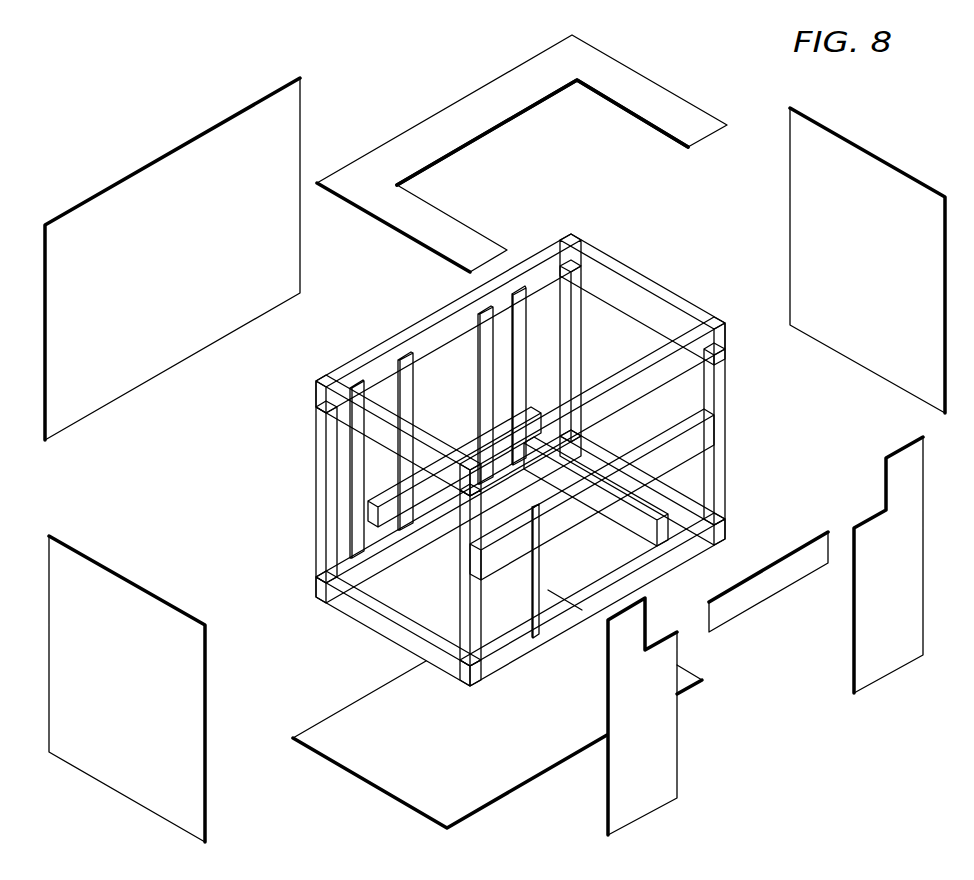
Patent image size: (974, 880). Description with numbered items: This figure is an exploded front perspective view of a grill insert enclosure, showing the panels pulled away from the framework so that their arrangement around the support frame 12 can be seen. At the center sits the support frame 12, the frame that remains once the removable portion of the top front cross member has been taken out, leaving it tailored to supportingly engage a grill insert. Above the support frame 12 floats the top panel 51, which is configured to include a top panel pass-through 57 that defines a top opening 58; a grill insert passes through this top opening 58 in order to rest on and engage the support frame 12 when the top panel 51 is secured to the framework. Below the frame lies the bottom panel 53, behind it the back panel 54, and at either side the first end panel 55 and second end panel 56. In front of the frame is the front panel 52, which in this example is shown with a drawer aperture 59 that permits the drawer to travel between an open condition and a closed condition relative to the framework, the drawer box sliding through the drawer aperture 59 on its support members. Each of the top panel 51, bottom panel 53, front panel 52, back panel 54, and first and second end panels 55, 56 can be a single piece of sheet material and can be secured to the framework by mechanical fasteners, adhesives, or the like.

The support frame 12 is at (520, 449).
The top panel 51 is at (522, 153).
The front panel 52 is at (765, 636).
The bottom panel 53 is at (497, 709).
The back panel 54 is at (172, 259).
The first end panel 55 is at (127, 689).
The second end panel 56 is at (867, 260).
The top panel pass-through 57 is at (542, 132).
The top opening 58 is at (542, 132).
The drawer aperture 59 is at (596, 507).